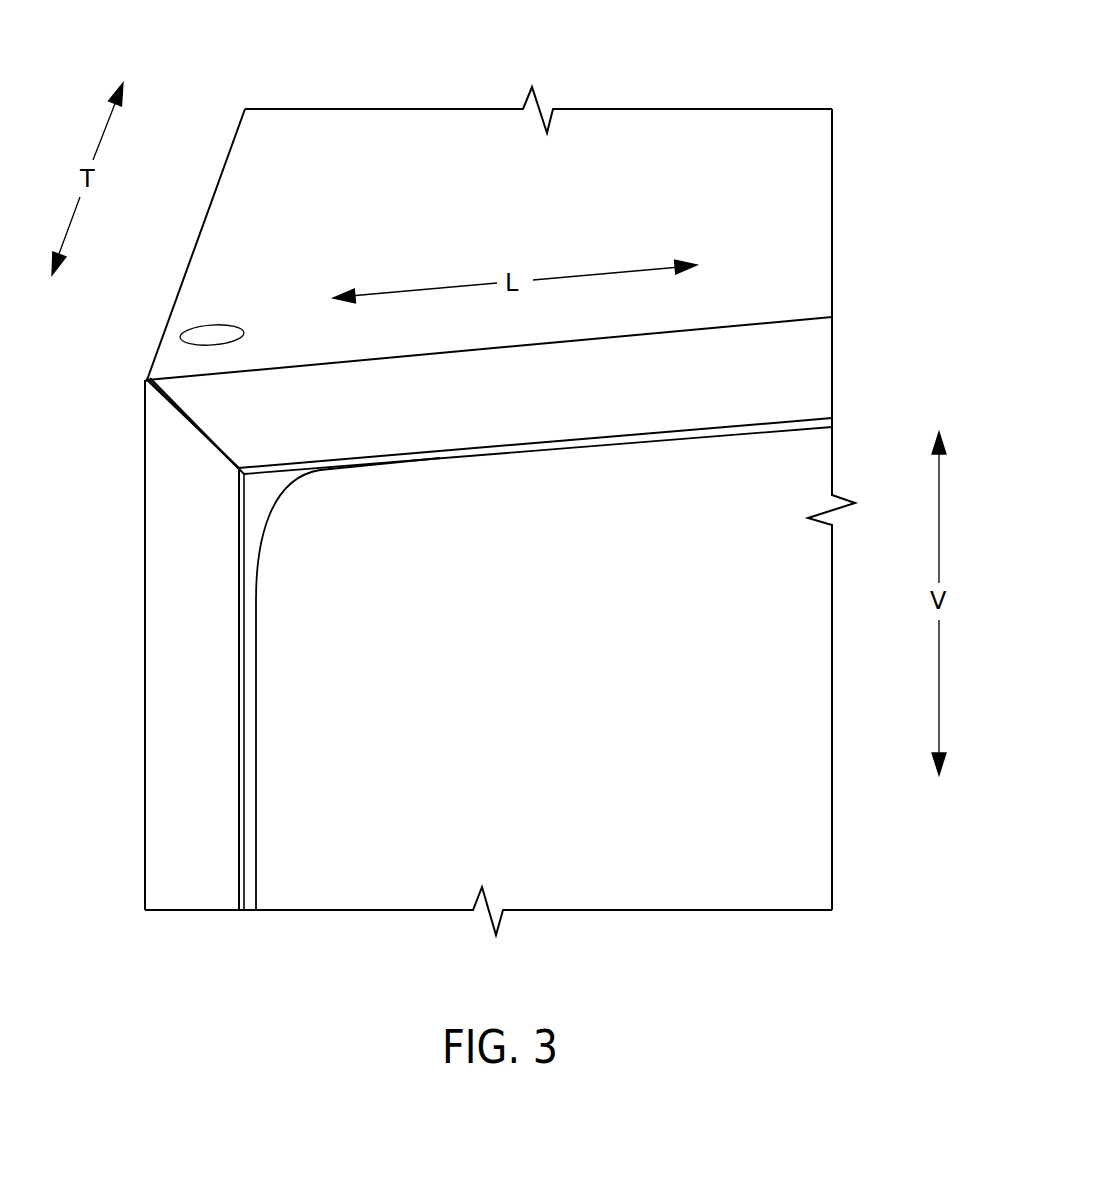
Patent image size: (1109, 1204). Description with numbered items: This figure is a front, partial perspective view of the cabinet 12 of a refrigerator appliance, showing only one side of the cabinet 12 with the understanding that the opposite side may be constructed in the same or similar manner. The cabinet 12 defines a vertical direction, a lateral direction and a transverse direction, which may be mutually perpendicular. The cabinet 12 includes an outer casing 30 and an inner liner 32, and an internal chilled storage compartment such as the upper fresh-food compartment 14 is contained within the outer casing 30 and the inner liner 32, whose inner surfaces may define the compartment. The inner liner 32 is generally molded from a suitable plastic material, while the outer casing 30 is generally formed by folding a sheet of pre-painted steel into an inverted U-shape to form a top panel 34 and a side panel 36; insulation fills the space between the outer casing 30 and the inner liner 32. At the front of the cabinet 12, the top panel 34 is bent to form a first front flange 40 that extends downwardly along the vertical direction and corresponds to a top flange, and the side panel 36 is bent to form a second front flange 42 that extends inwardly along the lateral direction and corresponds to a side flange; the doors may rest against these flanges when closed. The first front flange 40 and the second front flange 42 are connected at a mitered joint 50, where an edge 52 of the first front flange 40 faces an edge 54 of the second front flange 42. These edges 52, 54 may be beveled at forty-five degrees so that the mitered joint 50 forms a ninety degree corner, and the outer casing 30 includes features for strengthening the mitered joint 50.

The cabinet 12 is at (645, 109).
The upper fresh-food compartment 14 is at (683, 840).
The outer casing 30 is at (203, 228).
The inner liner 32 is at (252, 667).
The top panel 34 is at (788, 223).
The side panel 36 is at (143, 812).
The first front flange 40 is at (788, 358).
The second front flange 42 is at (175, 710).
The mitered joint 50 is at (130, 370).
The edge of first front flange 52 is at (209, 429).
The edge of second front flange 54 is at (162, 430).